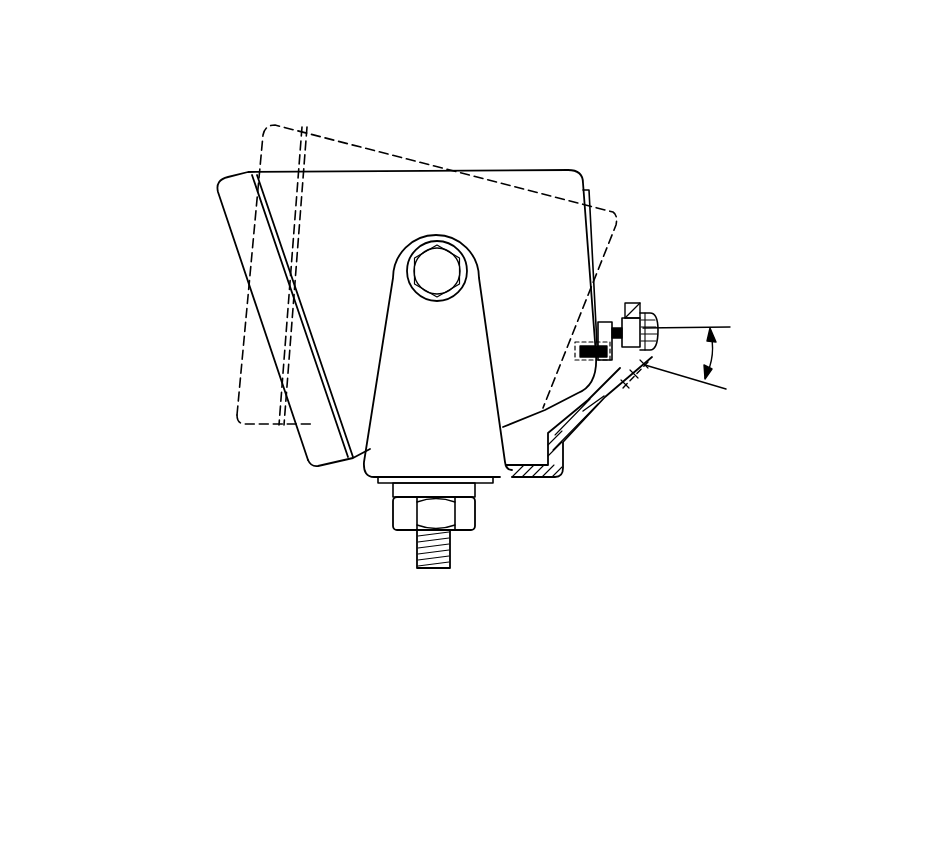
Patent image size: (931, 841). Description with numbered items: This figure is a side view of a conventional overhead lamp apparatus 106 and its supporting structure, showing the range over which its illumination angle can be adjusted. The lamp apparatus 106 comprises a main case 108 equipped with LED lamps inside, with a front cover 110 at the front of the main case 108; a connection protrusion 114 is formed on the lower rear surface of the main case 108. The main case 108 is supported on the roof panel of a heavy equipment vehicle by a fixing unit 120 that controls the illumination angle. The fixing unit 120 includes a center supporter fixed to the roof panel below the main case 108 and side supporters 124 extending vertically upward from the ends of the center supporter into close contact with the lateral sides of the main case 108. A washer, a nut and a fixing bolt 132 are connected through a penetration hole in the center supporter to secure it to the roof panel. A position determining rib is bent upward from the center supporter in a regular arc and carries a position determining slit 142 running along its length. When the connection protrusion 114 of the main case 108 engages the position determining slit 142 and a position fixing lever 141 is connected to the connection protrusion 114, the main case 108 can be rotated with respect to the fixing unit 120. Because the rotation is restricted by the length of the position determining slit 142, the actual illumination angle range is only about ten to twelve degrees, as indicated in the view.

The lamp apparatus 106 is at (500, 120).
The main case 108 is at (557, 181).
The front cover 110 is at (245, 207).
The connection protrusion 114 is at (615, 320).
The fixing unit 120 is at (467, 558).
The side supporter 124 is at (393, 418).
The fixing bolt 132 is at (417, 558).
The position fixing lever 141 is at (659, 321).
The position determining slit 142 is at (603, 401).